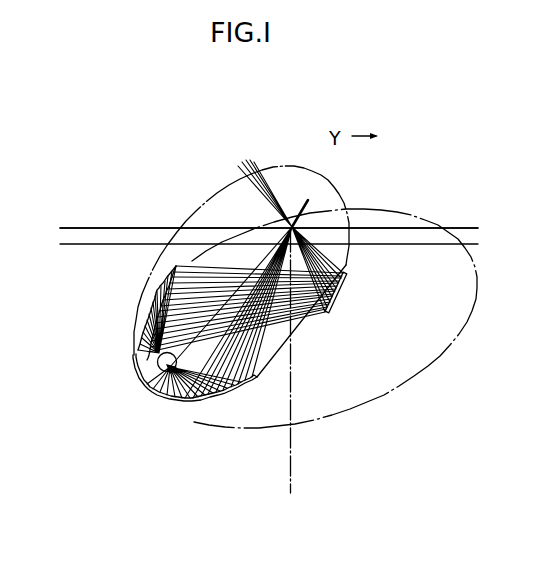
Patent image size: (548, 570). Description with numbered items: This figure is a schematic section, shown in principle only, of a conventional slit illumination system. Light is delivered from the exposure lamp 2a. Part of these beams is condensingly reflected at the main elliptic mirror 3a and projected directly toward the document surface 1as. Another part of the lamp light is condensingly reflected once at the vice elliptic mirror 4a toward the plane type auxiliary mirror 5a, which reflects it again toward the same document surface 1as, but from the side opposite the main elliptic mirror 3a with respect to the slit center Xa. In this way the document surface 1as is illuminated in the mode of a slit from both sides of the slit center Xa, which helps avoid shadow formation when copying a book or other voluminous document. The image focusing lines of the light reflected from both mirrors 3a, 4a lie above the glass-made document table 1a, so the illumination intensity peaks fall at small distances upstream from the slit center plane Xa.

The document table 1a is at (63, 236).
The document surface 1as is at (122, 228).
The exposure lamp 2a is at (158, 360).
The main elliptic mirror 3a is at (184, 403).
The vice elliptic mirror 4a is at (147, 298).
The plane type auxiliary mirror 5a is at (342, 296).
The slit center Xa is at (290, 477).